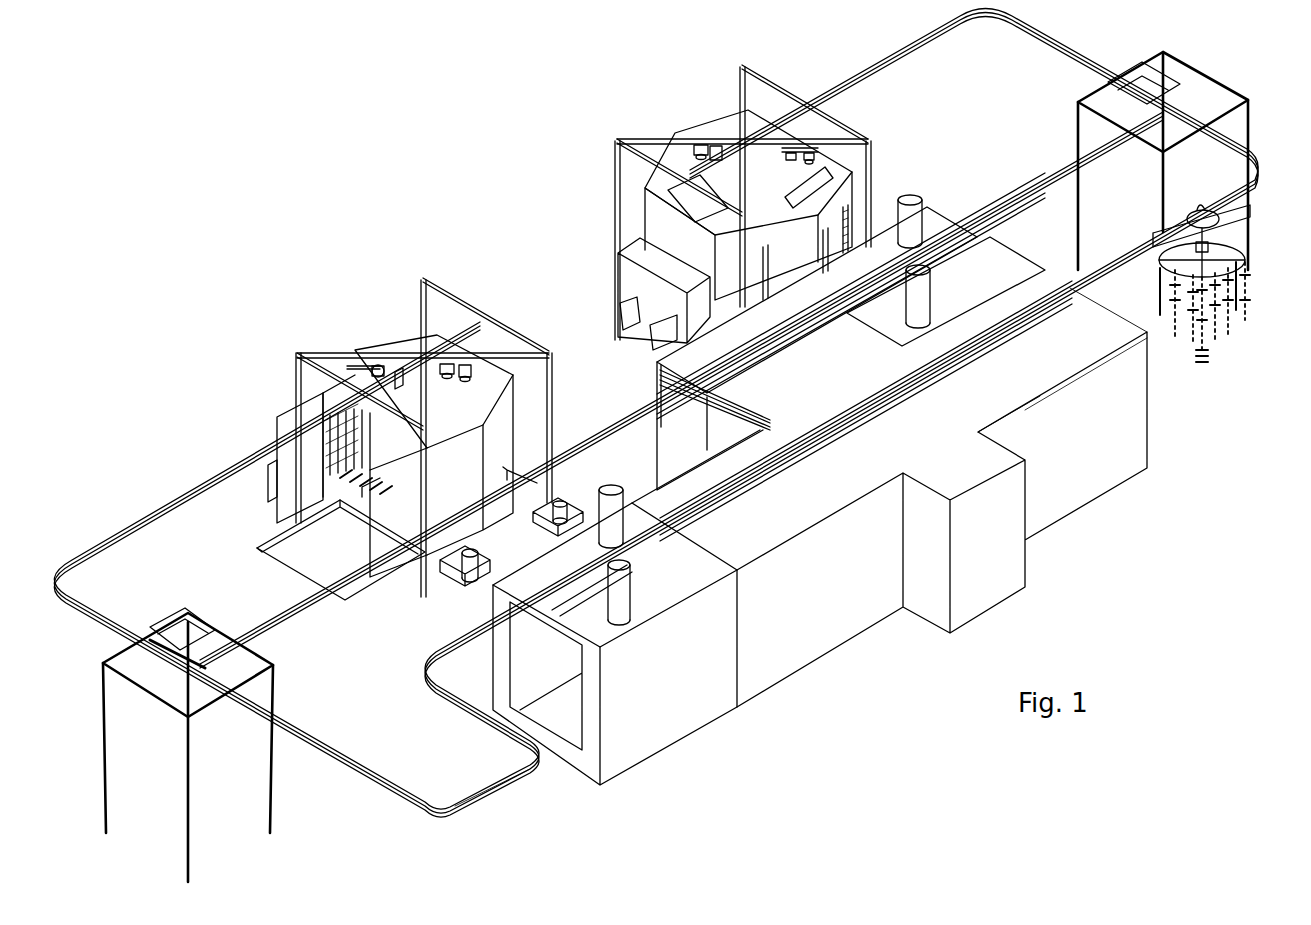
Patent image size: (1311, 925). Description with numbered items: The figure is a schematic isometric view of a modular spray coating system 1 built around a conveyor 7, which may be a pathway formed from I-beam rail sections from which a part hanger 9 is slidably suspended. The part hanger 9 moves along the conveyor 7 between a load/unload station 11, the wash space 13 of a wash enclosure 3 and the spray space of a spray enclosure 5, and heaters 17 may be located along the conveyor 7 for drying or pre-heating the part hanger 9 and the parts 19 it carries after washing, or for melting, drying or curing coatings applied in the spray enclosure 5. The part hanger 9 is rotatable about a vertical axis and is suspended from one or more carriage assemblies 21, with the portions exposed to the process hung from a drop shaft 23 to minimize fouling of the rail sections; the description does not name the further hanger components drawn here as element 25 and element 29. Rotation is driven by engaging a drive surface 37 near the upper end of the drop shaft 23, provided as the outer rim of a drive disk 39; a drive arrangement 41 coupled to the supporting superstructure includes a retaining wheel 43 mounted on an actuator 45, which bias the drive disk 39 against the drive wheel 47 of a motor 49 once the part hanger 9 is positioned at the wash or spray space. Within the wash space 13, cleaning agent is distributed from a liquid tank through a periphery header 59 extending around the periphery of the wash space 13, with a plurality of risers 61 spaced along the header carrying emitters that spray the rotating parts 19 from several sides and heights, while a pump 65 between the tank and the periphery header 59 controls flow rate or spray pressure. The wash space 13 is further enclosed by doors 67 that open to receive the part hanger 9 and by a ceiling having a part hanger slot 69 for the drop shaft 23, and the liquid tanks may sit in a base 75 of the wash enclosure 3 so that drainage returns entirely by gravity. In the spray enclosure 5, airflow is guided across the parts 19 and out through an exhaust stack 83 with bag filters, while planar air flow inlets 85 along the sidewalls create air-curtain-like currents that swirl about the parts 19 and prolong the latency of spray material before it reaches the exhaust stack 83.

The modular spray coating system 1 is at (510, 188).
The wash enclosure 3 is at (343, 373).
The spray enclosure 5 is at (670, 155).
The conveyor 7 is at (933, 41).
The part hanger 9 is at (1206, 276).
The load/unload station 11 is at (507, 805).
The wash space 13 is at (383, 530).
The heaters 17 is at (935, 215).
The parts 19 is at (1243, 312).
The carriage assemblies 21 is at (1165, 233).
The drop shaft 23 is at (1215, 247).
The carrier disk 25 is at (1220, 265).
The hanger rods 29 is at (1240, 285).
The drive surface 37 is at (1198, 210).
The drive disk 39 is at (1215, 222).
The drive arrangement 41 is at (705, 145).
The retaining wheel 43 is at (377, 366).
The actuator 45 is at (353, 363).
The drive wheel 47 is at (445, 364).
The motor 49 is at (467, 366).
The periphery header 59 is at (337, 483).
The risers 61 is at (362, 487).
The pump 65 is at (460, 575).
The doors 67 is at (287, 427).
The part hanger slot 69 is at (402, 387).
The base 75 is at (272, 477).
The exhaust stack 83 is at (610, 308).
The planar air flow inlets 85 is at (850, 220).